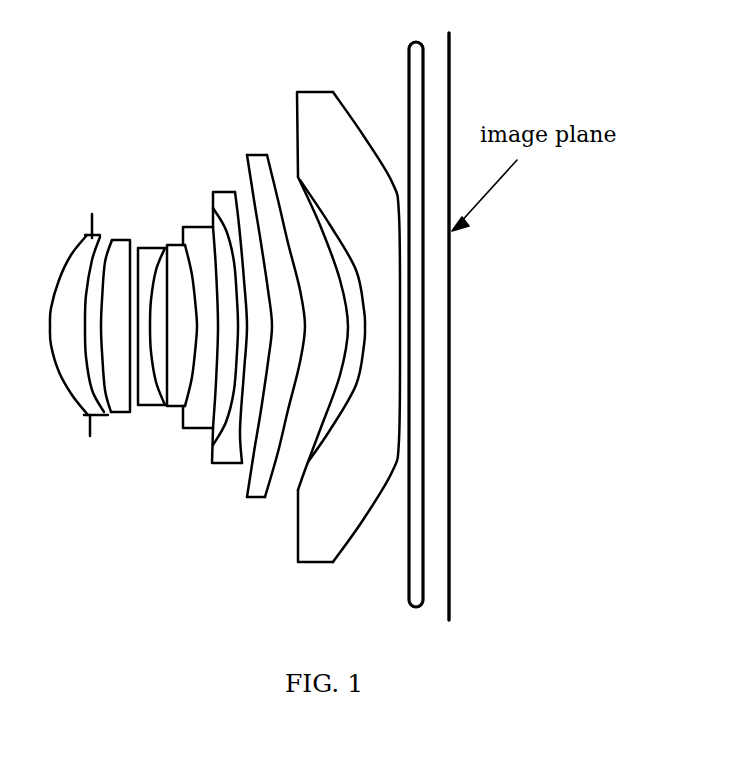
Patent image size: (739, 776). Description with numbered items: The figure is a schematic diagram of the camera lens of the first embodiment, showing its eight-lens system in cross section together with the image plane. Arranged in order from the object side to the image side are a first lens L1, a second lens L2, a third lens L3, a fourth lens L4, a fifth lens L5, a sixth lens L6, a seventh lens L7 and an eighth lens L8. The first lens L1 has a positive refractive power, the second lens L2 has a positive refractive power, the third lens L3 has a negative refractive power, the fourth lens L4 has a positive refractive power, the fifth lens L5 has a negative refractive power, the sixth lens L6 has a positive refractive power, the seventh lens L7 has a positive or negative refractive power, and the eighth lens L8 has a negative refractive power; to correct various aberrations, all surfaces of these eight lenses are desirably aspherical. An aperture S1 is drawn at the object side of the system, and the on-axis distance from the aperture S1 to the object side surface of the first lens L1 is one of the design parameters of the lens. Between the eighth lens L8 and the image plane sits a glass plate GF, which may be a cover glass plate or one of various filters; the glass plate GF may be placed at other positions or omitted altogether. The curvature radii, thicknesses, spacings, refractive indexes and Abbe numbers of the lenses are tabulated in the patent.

The first lens L1 is at (79, 319).
The second lens L2 is at (115, 317).
The third lens L3 is at (148, 314).
The fourth lens L4 is at (175, 314).
The fifth lens L5 is at (200, 316).
The sixth lens L6 is at (229, 317).
The seventh lens L7 is at (276, 315).
The eighth lens L8 is at (348, 316).
The aperture S1 is at (92, 220).
The glass plate GF is at (413, 314).